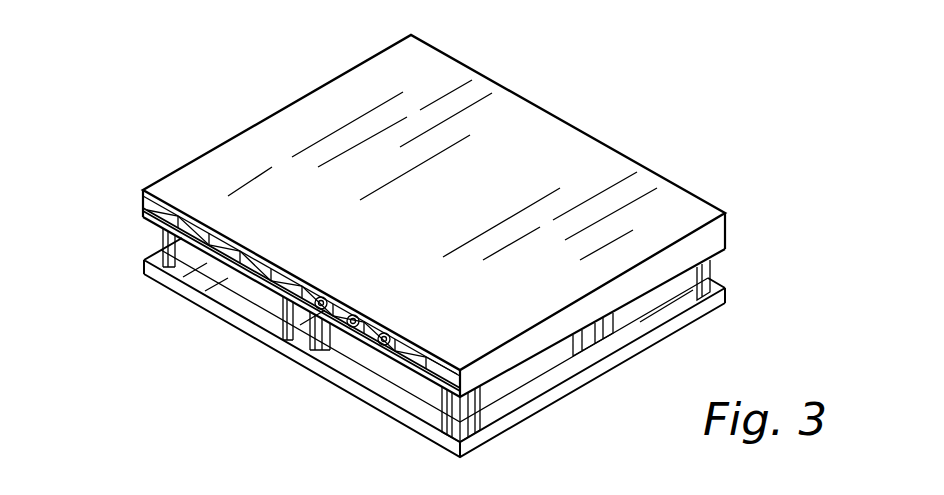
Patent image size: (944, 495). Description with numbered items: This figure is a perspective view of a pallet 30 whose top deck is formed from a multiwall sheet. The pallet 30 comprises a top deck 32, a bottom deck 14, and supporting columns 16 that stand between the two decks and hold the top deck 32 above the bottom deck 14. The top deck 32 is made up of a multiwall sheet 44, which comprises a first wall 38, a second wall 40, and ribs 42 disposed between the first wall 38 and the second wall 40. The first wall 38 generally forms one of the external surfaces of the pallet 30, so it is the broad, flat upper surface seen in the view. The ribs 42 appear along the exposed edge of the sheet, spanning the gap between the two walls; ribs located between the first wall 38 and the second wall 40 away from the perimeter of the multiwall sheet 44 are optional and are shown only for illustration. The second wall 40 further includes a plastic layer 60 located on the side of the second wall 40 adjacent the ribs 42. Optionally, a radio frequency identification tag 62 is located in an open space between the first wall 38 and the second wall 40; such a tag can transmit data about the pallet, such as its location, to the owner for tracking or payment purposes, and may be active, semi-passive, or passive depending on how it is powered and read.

The bottom deck 14 is at (200, 302).
The supporting columns 16 is at (488, 404).
The pallet 30 is at (430, 249).
The top deck 32 is at (318, 108).
The first wall 38 is at (372, 385).
The second wall 40 is at (406, 372).
The ribs 42 is at (250, 282).
The multiwall sheet 44 is at (166, 224).
The plastic layer 60 is at (240, 266).
The radio frequency identification tag 62 is at (384, 345).